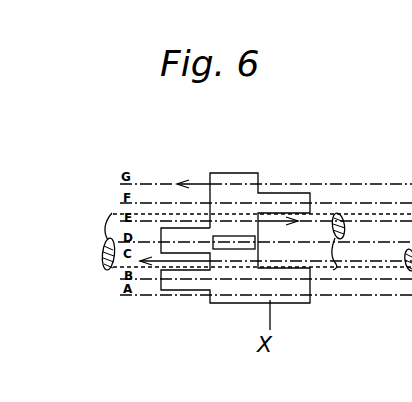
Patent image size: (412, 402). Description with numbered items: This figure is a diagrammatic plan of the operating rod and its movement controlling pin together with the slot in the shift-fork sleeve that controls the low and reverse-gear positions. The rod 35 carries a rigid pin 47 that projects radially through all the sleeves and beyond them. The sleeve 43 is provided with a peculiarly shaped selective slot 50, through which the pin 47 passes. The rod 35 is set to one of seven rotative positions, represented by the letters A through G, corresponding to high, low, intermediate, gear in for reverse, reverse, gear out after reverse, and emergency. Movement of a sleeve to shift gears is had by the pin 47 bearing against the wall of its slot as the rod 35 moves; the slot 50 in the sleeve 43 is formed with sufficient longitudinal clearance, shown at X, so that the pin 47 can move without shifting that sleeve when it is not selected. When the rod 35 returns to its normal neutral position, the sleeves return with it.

The selective slot 50 is at (228, 193).
The shift-fork sleeve 43 is at (235, 280).
The rigid pin 47 is at (228, 249).
The operating rod 35 is at (342, 236).